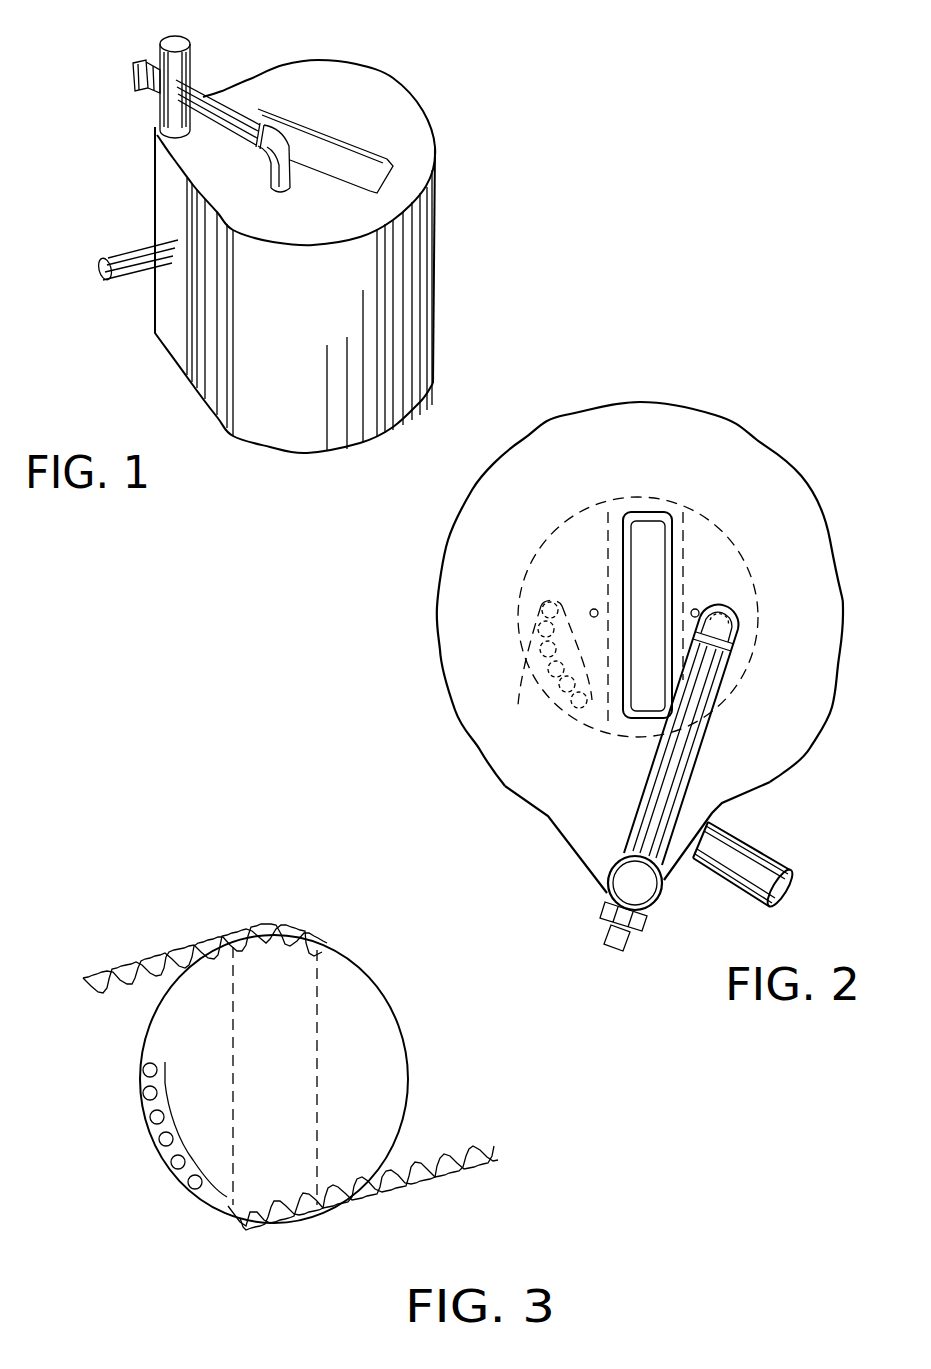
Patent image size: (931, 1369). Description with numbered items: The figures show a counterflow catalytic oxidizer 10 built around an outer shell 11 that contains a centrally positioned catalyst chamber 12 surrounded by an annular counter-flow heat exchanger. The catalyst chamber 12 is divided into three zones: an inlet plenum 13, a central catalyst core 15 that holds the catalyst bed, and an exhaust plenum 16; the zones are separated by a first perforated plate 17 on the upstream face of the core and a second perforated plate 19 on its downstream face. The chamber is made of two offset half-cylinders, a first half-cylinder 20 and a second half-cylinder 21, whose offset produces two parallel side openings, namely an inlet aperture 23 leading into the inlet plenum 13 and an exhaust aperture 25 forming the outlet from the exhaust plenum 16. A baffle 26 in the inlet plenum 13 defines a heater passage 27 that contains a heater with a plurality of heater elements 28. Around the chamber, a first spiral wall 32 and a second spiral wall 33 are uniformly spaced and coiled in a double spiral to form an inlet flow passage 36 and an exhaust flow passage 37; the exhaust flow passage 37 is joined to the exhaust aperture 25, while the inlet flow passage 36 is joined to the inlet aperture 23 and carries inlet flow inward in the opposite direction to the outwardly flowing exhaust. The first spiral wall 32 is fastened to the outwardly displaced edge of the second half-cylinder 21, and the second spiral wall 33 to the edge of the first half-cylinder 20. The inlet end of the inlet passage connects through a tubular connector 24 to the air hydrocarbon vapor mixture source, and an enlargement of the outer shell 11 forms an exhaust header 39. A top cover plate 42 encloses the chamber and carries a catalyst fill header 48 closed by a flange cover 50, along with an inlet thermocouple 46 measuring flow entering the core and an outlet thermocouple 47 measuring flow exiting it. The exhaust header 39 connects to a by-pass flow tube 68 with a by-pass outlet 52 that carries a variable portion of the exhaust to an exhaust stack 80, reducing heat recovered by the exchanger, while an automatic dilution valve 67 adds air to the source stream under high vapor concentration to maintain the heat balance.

In FIG. 1, the counterflow catalytic oxidizer 10 is at (453, 312).
In FIG. 1, the outer shell 11 is at (437, 218).
In FIG. 2, the outer shell 11 is at (505, 786).
In FIG. 3, the catalyst chamber 12 is at (415, 1024).
In FIG. 3, the inlet plenum 13 is at (212, 1071).
In FIG. 3, the central catalyst core 15 is at (286, 1065).
In FIG. 3, the exhaust plenum 16 is at (366, 1094).
In FIG. 3, the first perforated plate 17 is at (231, 1026).
In FIG. 3, the second perforated plate 19 is at (319, 1008).
In FIG. 3, the first half-cylinder 20 is at (180, 1181).
In FIG. 3, the second half-cylinder 21 is at (367, 962).
In FIG. 3, the inlet aperture 23 is at (352, 1196).
In FIG. 1, the tubular connector 24 is at (145, 278).
In FIG. 2, the tubular connector 24 is at (790, 888).
In FIG. 3, the exhaust aperture 25 is at (321, 952).
In FIG. 3, the baffle 26 is at (160, 1157).
In FIG. 3, the heater passage 27 is at (160, 1105).
In FIG. 2, the heater elements 28 is at (565, 695).
In FIG. 3, the heater elements 28 is at (150, 1138).
In FIG. 3, the first spiral wall 32 is at (125, 970).
In FIG. 3, the second spiral wall 33 is at (391, 1192).
In FIG. 3, the inlet flow passage 36 is at (272, 1228).
In FIG. 3, the exhaust flow passage 37 is at (207, 942).
In FIG. 1, the exhaust header 39 is at (165, 213).
In FIG. 2, the exhaust header 39 is at (577, 828).
In FIG. 1, the top cover plate 42 is at (407, 141).
In FIG. 2, the top cover plate 42 is at (505, 584).
In FIG. 2, the inlet thermocouple 46 is at (589, 614).
In FIG. 2, the outlet thermocouple 47 is at (695, 608).
In FIG. 1, the catalyst fill header 48 is at (338, 150).
In FIG. 2, the catalyst fill header 48 is at (643, 585).
In FIG. 2, the flange cover 50 is at (663, 572).
In FIG. 1, the by-pass outlet 52 is at (284, 193).
In FIG. 2, the by-pass outlet 52 is at (724, 600).
In FIG. 1, the automatic dilution valve 67 is at (133, 70).
In FIG. 2, the automatic dilution valve 67 is at (647, 923).
In FIG. 1, the by-pass flow tube 68 is at (205, 122).
In FIG. 2, the by-pass flow tube 68 is at (697, 722).
In FIG. 1, the exhaust stack 80 is at (183, 38).
In FIG. 2, the exhaust stack 80 is at (650, 893).